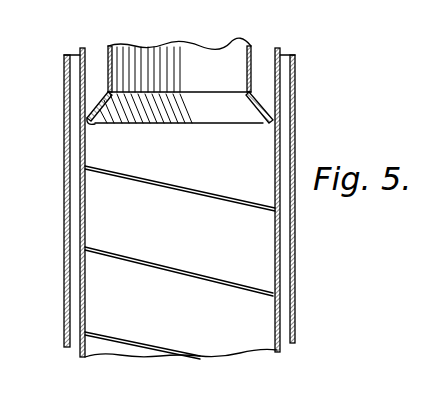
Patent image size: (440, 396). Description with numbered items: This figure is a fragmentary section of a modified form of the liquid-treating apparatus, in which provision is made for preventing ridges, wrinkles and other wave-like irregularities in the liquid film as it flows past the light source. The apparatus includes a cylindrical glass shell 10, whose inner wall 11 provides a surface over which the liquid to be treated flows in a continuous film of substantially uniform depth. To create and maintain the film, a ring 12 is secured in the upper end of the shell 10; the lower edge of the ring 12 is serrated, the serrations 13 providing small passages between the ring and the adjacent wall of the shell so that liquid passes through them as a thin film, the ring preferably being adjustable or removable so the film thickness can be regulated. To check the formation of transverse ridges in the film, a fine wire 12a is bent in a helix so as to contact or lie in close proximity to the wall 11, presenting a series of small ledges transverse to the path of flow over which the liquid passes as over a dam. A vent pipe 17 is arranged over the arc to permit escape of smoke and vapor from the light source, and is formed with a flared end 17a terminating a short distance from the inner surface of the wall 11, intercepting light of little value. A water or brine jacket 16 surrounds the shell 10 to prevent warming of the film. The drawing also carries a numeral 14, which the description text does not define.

The cylindrical glass shell 10 is at (80, 205).
The inner wall 11 is at (275, 153).
The ring 12 is at (80, 102).
The fine wire 12a is at (170, 190).
The serrations 13 is at (92, 125).
The pipe section 14 is at (186, 393).
The water or brine jacket 16 is at (295, 263).
The vent pipe 17 is at (220, 50).
The flared end 17a is at (258, 116).